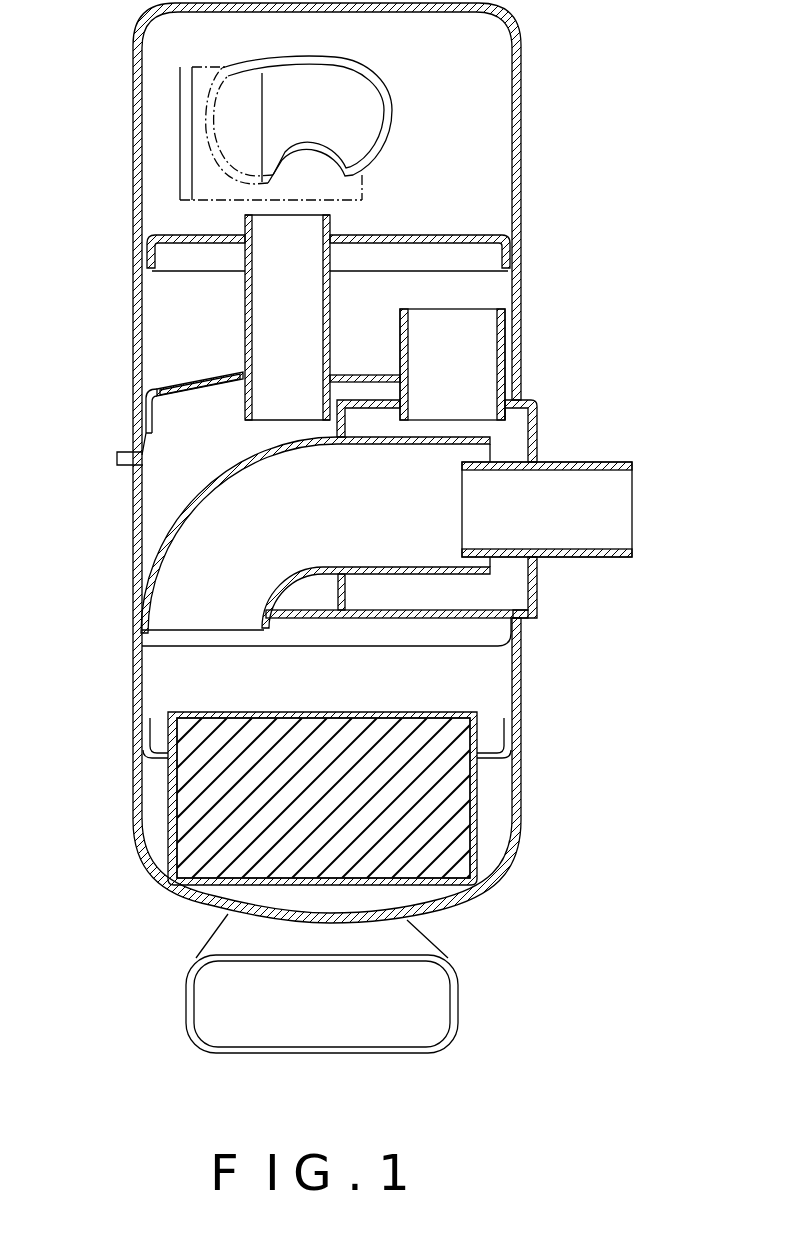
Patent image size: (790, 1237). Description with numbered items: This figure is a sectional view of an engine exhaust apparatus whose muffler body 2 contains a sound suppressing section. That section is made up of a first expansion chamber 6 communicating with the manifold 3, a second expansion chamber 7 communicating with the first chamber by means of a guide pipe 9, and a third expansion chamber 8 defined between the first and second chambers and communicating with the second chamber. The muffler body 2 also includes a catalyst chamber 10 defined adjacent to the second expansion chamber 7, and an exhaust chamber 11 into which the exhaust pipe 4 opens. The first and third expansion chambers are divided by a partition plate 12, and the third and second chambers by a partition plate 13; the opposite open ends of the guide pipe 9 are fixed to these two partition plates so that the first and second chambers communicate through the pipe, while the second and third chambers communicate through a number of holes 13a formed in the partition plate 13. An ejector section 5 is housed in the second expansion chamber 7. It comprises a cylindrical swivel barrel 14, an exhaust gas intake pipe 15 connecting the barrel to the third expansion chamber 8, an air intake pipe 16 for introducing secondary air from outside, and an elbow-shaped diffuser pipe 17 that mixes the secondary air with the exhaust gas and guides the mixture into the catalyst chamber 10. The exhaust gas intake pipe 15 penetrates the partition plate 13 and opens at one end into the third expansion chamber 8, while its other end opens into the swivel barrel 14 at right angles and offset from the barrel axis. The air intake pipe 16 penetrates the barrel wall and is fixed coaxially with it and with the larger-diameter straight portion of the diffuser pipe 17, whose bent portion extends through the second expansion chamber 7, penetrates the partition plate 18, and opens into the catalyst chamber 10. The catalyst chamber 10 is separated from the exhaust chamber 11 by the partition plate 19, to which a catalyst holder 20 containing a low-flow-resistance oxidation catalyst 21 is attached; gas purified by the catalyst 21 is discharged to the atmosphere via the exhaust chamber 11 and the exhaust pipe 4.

The muffler body 2 is at (128, 118).
The manifold 3 is at (384, 77).
The exhaust pipe 4 is at (420, 943).
The ejector section 5 is at (546, 405).
The first expansion chamber 6 is at (498, 112).
The second expansion chamber 7 is at (155, 500).
The third expansion chamber 8 is at (152, 285).
The guide pipe 9 is at (332, 230).
The catalyst chamber 10 is at (155, 672).
The exhaust chamber 11 is at (200, 893).
The partition plate 12 is at (480, 240).
The partition plate 13 is at (160, 390).
The holes 13a is at (203, 380).
The swivel barrel 14 is at (536, 442).
The exhaust gas intake pipe 15 is at (500, 310).
The air intake pipe 16 is at (597, 433).
The diffuser pipe 17 is at (153, 557).
The partition plate 18 is at (317, 620).
The partition plate 19 is at (495, 763).
The catalyst holder 20 is at (477, 857).
The catalyst 21 is at (453, 712).